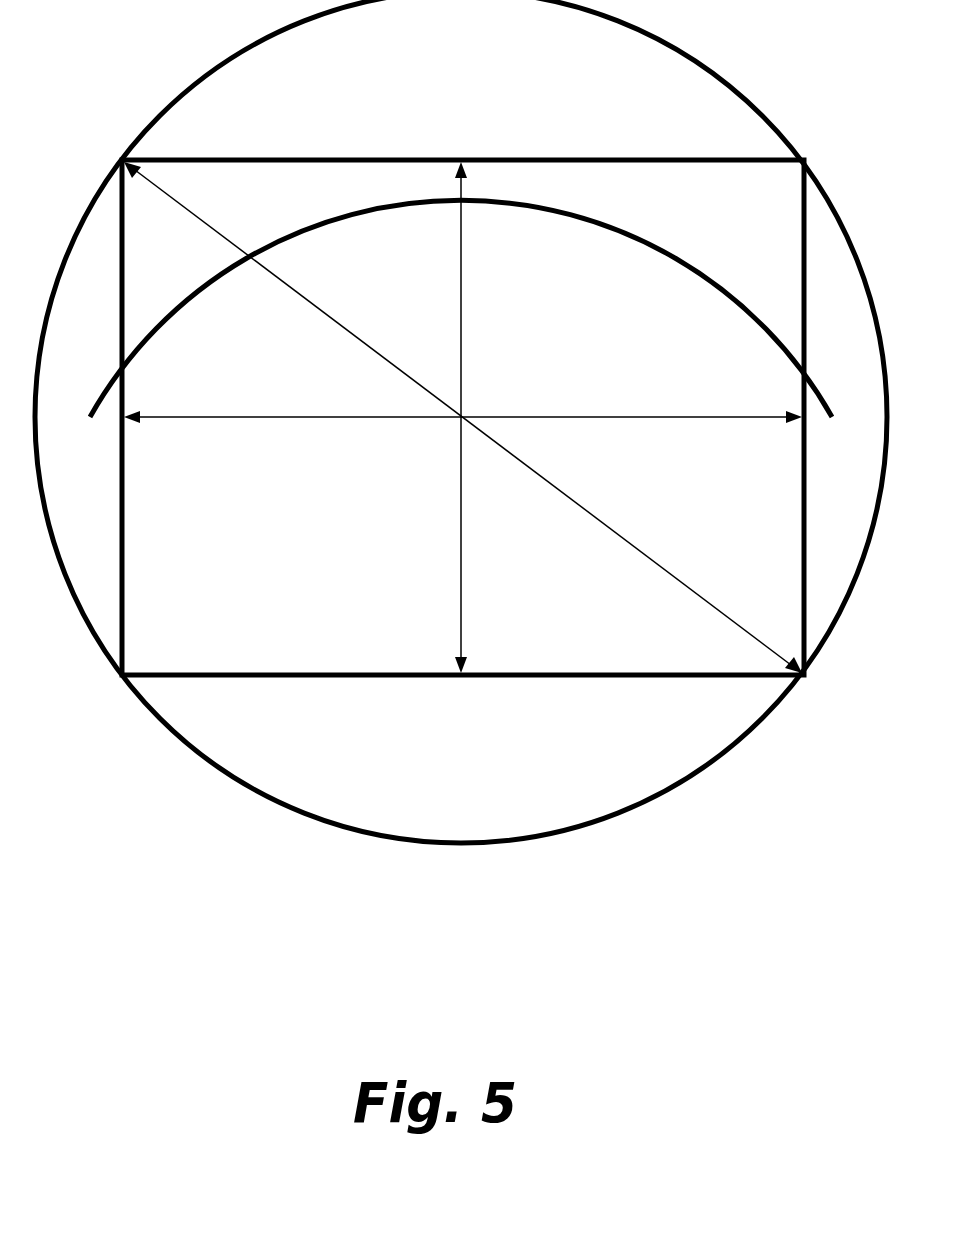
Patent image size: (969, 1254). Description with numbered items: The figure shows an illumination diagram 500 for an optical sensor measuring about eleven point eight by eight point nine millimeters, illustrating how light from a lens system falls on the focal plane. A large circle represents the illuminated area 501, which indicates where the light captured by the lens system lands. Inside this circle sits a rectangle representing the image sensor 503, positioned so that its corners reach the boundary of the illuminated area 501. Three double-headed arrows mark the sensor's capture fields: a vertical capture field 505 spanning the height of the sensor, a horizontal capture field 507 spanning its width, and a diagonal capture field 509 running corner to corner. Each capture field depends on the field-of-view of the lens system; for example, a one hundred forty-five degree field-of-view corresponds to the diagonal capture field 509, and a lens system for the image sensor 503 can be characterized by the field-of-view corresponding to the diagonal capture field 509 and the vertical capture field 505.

The illumination diagram 500 is at (229, 923).
The illuminated area 501 is at (410, 67).
The image sensor 503 is at (306, 592).
The vertical capture field 505 is at (461, 272).
The horizontal capture field 507 is at (636, 416).
The diagonal capture field 509 is at (626, 538).